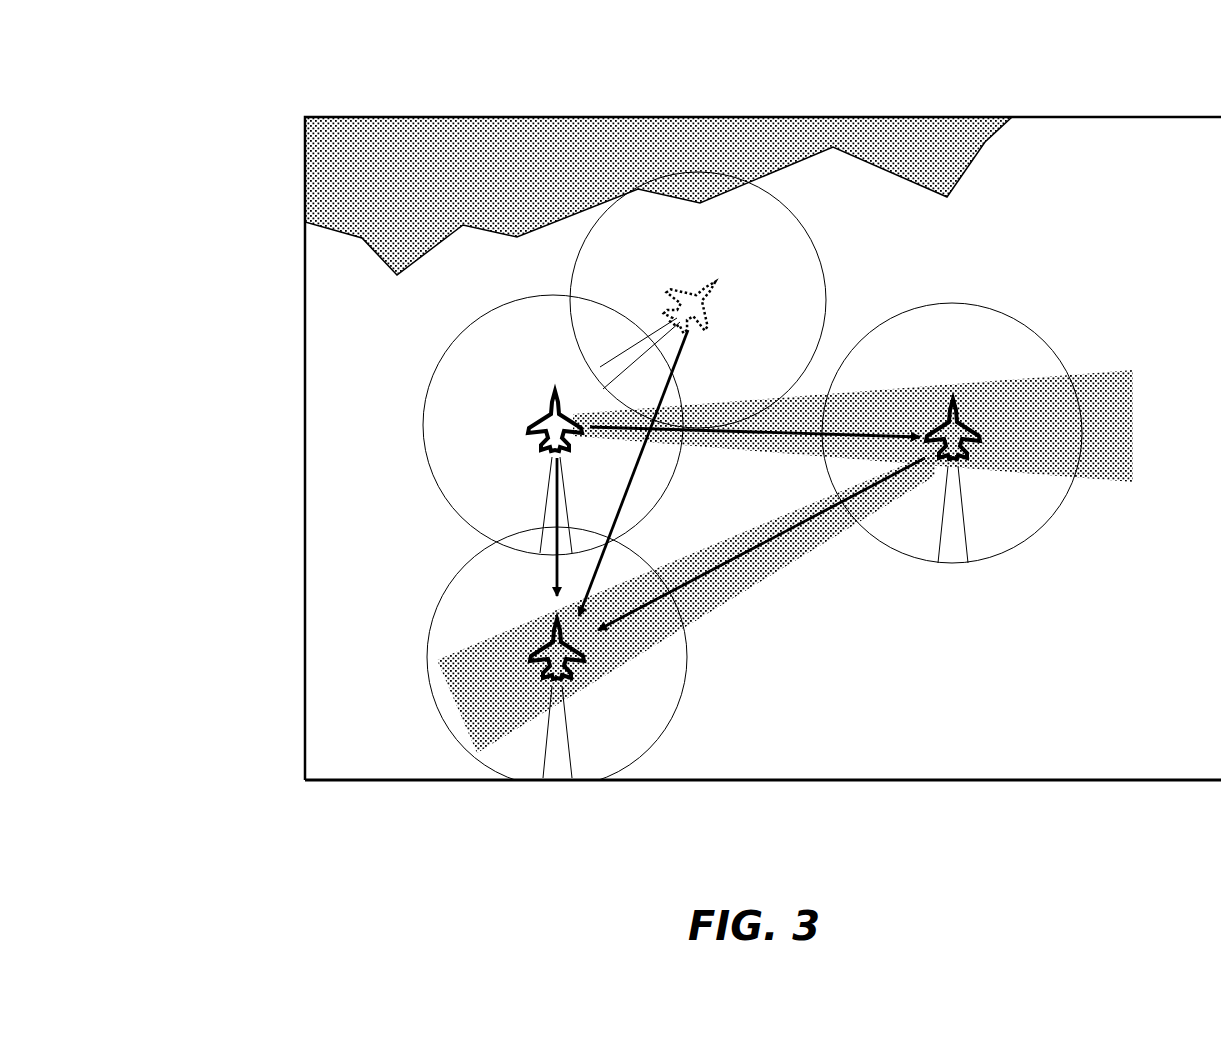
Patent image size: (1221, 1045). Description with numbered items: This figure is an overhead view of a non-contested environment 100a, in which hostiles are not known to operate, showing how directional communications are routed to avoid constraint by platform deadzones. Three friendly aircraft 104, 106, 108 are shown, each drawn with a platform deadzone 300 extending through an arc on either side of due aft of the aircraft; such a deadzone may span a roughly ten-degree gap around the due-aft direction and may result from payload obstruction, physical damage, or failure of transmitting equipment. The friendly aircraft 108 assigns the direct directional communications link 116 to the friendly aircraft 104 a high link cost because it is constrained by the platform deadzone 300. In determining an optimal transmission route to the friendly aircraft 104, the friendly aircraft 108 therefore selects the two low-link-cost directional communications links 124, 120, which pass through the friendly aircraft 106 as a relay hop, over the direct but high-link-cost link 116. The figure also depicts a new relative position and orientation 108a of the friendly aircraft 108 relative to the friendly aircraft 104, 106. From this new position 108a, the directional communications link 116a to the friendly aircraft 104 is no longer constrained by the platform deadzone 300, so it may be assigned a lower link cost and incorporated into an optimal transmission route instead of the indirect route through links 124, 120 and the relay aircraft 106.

The environment 100a is at (228, 70).
The friendly aircraft 104 is at (540, 647).
The friendly aircraft 106 is at (960, 410).
The friendly aircraft 108 is at (540, 420).
The new relative position/orientation of friendly aircraft 108a is at (724, 282).
The directional communications link 116 is at (555, 510).
The directional communications link 116a is at (640, 462).
The directional communications link 120 is at (710, 574).
The directional communications link 124 is at (796, 428).
The platform deadzone 300 is at (592, 361).